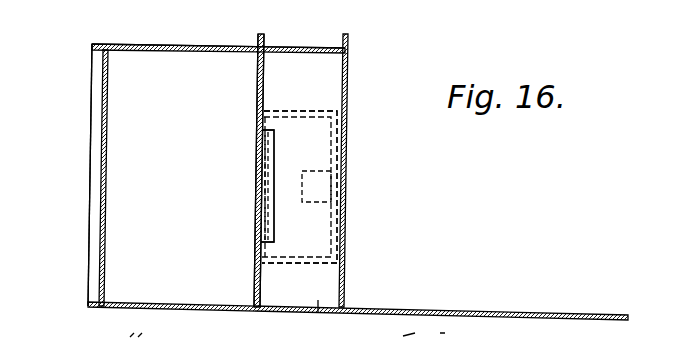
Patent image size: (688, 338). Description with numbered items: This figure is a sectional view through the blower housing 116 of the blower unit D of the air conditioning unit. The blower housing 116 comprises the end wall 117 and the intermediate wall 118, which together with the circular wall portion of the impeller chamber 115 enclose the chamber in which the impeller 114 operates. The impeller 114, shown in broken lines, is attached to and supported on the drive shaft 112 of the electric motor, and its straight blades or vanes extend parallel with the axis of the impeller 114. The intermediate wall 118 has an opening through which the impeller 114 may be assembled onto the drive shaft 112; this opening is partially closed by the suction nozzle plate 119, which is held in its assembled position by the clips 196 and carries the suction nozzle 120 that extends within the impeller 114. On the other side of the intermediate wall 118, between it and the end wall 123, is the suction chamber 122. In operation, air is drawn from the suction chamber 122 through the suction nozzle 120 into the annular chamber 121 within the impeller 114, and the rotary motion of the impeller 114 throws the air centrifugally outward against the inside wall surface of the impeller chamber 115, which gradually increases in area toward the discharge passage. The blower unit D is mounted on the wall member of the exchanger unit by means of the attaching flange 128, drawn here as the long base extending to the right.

The blower housing 116 is at (100, 44).
The impeller chamber 115 is at (283, 60).
The clips 196 is at (258, 72).
The end wall 123 is at (103, 126).
The suction chamber 122 is at (118, 250).
The impeller 114 is at (314, 110).
The annular chamber 121 is at (313, 140).
The drive shaft 112 is at (322, 170).
The suction nozzle 120 is at (262, 130).
The suction nozzle plate 119 is at (256, 262).
The end wall 117 is at (345, 227).
The intermediate wall 118 is at (256, 270).
The blower unit D is at (318, 300).
The attaching flange 128 is at (552, 315).